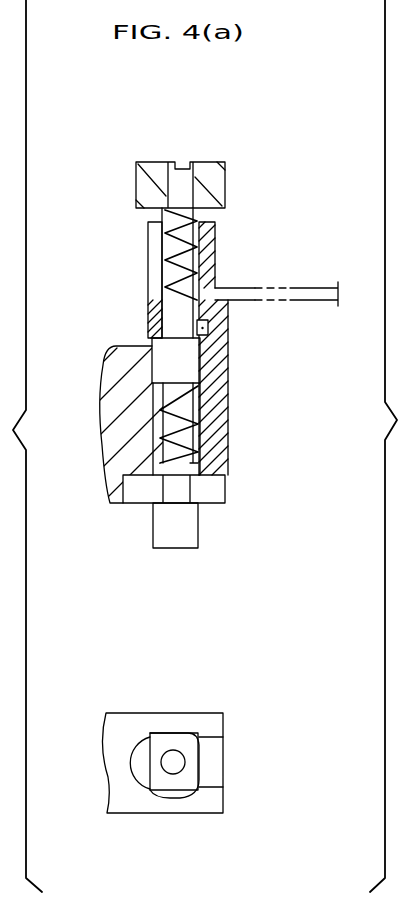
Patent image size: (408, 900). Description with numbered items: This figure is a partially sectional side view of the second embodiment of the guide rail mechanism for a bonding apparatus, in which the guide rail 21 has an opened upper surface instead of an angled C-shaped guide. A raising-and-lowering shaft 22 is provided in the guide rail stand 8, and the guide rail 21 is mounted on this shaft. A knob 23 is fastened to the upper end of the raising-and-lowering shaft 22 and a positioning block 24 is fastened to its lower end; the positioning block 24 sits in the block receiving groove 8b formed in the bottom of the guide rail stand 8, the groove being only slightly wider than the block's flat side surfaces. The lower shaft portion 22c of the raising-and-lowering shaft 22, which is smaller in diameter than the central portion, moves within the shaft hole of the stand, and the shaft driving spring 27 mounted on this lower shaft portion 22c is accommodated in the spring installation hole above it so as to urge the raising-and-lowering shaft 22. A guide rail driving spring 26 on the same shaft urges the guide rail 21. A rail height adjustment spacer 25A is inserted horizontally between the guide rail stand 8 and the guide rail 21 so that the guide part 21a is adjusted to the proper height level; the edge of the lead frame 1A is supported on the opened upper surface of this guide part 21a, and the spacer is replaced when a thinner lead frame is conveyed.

The lead frame 1A is at (325, 280).
The guide rail stand 8 is at (118, 409).
The block receiving groove 8b is at (215, 490).
The guide rail 21 is at (219, 241).
The guide part 21a is at (223, 290).
The raising-and-lowering shaft 22 is at (192, 365).
The lower shaft portion 22c is at (173, 757).
The knob 23 is at (153, 168).
The positioning block 24 is at (187, 531).
The rail height adjustment spacer 25A is at (217, 341).
The guide rail driving spring 26 is at (163, 249).
The shaft driving spring 27 is at (200, 433).